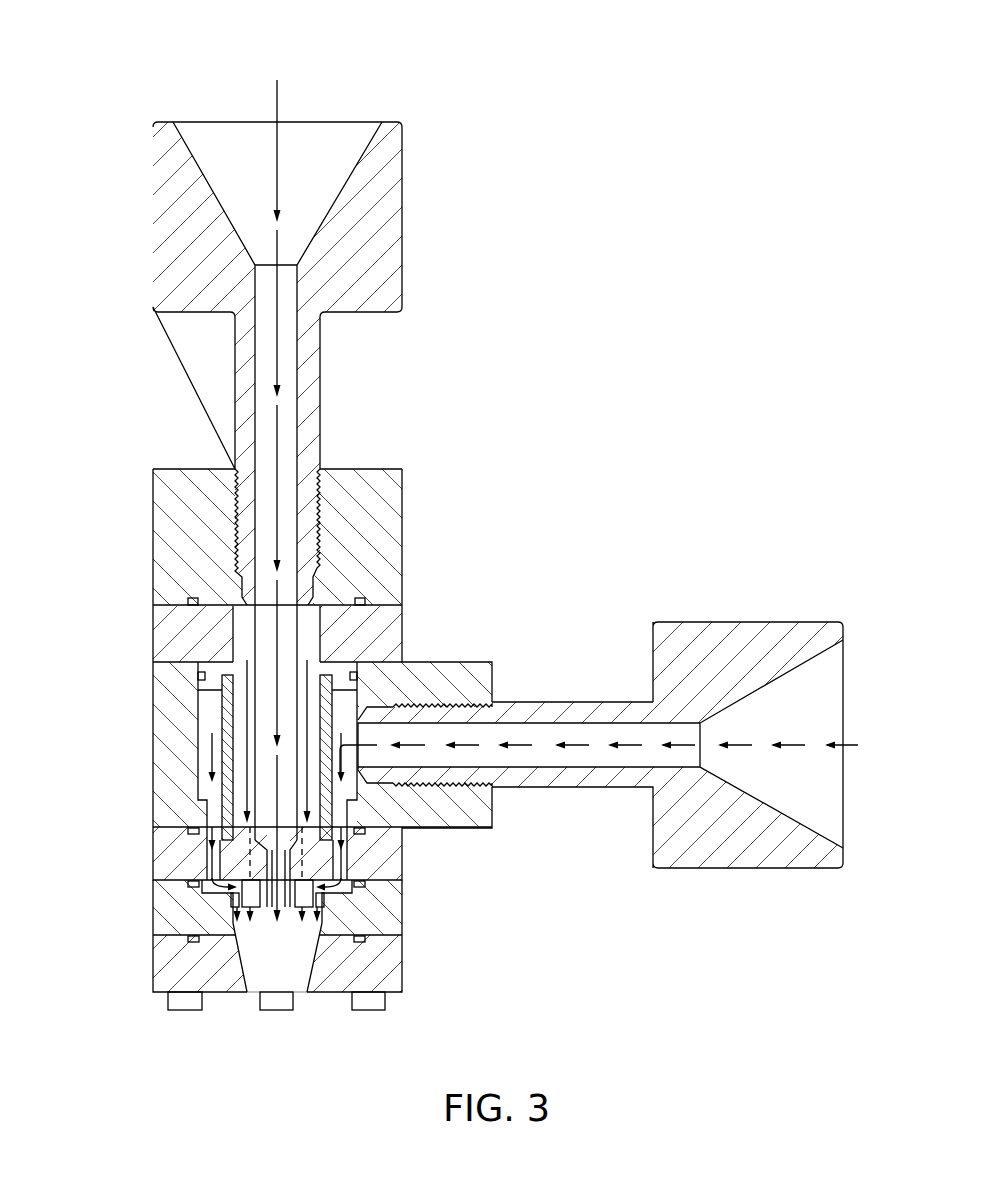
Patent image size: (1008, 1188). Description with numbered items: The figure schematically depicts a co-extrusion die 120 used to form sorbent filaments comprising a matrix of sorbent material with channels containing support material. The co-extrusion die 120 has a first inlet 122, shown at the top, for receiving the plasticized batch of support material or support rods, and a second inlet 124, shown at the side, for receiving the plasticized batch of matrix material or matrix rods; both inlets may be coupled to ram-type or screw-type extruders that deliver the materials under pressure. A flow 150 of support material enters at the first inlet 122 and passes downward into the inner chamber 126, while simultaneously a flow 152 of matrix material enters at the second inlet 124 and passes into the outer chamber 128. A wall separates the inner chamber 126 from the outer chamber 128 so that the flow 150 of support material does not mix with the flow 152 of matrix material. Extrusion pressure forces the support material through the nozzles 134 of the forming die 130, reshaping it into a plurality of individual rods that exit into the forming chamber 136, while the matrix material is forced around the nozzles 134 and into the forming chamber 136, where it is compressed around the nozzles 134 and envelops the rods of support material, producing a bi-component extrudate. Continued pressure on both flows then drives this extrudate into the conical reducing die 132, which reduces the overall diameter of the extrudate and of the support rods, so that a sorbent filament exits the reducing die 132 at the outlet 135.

The co-extrusion die 120 is at (501, 484).
The first inlet 122 is at (403, 52).
The second inlet 124 is at (805, 716).
The inner chamber 126 is at (232, 726).
The outer chamber 128 is at (196, 731).
The forming die 130 is at (136, 838).
The conical reducing die 132 is at (142, 955).
The nozzles 134 is at (240, 892).
The outlet 135 is at (252, 1001).
The forming chamber 136 is at (288, 924).
The flow of support material 150 is at (248, 89).
The flow of matrix material 152 is at (212, 760).